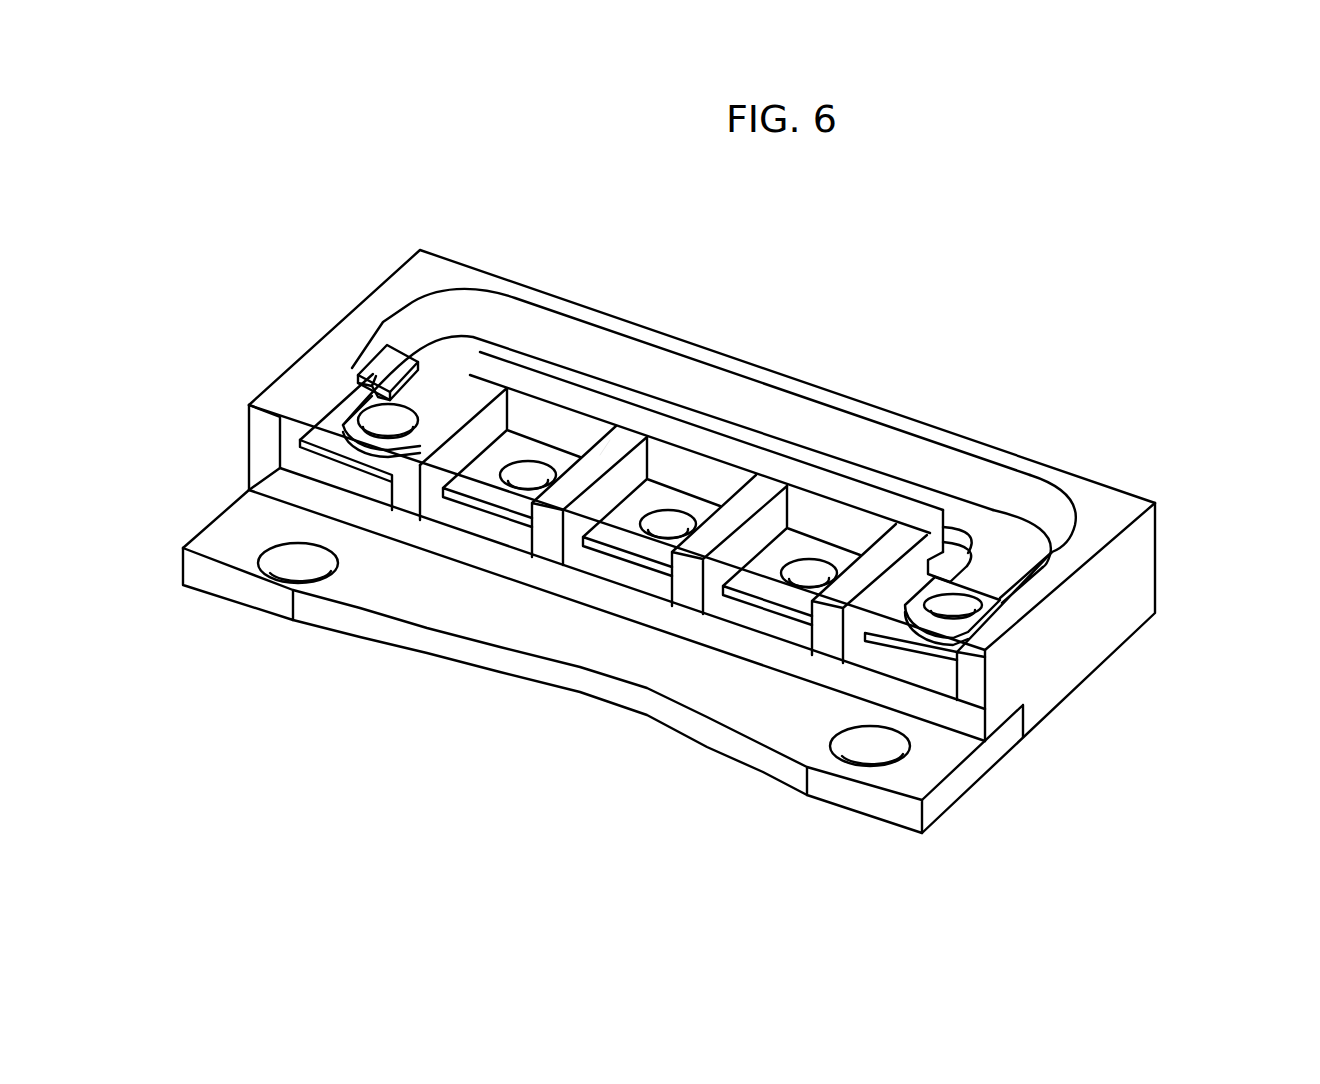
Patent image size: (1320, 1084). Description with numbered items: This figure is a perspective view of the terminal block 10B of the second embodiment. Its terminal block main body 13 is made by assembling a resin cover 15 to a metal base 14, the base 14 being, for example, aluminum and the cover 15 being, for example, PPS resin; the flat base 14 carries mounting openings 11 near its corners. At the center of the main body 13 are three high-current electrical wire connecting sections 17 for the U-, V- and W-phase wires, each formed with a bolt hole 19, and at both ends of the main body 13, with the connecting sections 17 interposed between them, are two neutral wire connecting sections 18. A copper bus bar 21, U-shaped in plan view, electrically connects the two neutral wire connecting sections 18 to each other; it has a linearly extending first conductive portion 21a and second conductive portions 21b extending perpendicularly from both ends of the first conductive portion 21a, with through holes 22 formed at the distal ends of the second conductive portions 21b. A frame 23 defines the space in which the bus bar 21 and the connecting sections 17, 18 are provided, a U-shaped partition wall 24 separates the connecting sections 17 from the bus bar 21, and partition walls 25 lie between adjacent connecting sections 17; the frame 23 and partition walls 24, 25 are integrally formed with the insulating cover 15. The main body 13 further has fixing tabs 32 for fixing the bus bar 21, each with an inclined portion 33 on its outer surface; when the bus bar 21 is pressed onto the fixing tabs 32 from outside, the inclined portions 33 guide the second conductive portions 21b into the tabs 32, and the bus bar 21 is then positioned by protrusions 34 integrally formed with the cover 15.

The terminal block 10B is at (1105, 384).
The mounting hole 11 is at (272, 568).
The terminal block main body 13 is at (320, 332).
The base 14 is at (540, 640).
The cover 15 is at (1120, 632).
The high-current electrical wire connecting sections 17 is at (455, 490).
The neutral wire connecting sections 18 is at (305, 462).
The bolt holes 19 is at (518, 490).
The bus bar 21 is at (1015, 525).
The first conductive portion 21a is at (880, 478).
The second conductive portions 21b is at (355, 395).
The through holes 22 is at (382, 428).
The frame 23 is at (690, 355).
The partition wall 24 is at (705, 445).
The partition walls 25 is at (600, 455).
The fixing tabs 32 is at (382, 345).
The inclined portion 33 is at (404, 352).
The protrusions 34 is at (952, 522).